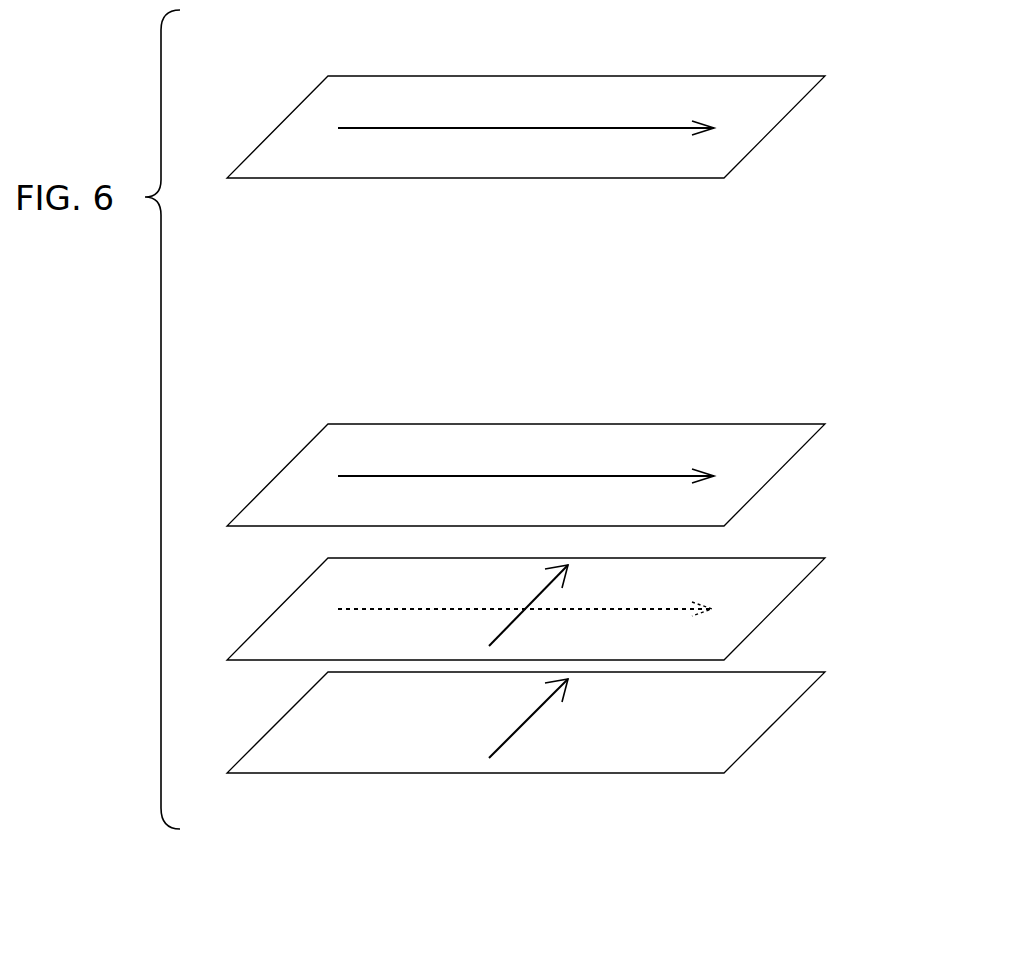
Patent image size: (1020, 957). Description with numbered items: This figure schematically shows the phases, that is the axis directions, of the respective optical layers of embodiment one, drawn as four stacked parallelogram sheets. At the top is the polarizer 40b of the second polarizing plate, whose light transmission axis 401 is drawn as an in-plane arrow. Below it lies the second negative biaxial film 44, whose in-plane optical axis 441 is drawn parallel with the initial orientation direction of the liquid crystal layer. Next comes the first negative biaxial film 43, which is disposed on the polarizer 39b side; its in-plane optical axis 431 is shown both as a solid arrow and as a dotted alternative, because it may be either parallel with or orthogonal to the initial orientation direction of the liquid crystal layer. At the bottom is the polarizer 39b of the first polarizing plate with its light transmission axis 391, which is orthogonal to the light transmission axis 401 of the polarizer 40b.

The polarizer 40b is at (773, 123).
The light transmission axis 401 is at (550, 128).
The second negative biaxial film 44 is at (772, 470).
The in-plane optical axis 441 is at (527, 476).
The first negative biaxial film 43 is at (773, 602).
The in-plane optical axis 431 is at (545, 590).
The polarizer 39b is at (773, 718).
The light transmission axis 391 is at (527, 722).